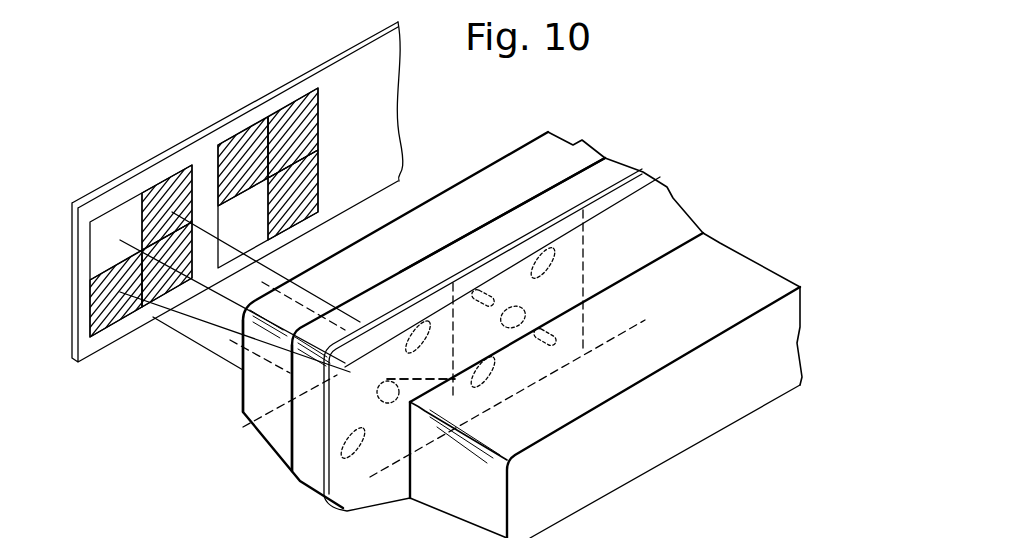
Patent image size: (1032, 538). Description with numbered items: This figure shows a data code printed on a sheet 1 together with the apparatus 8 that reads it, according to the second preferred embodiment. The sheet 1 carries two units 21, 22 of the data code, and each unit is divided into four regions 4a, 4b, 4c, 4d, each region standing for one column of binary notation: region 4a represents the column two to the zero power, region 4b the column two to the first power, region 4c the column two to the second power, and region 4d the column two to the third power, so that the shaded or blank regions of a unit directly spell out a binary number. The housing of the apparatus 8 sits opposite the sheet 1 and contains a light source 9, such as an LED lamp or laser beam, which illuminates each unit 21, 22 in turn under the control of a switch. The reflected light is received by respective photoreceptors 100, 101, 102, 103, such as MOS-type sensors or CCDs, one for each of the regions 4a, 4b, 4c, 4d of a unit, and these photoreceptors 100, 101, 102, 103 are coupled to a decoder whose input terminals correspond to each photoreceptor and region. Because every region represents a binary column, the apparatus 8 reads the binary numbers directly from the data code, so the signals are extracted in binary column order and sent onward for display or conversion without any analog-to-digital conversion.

The sheet 1 is at (212, 122).
The unit 21 is at (107, 253).
The unit 22 is at (283, 108).
The region 4a is at (100, 238).
The region 4b is at (104, 320).
The region 4c is at (165, 178).
The region 4d is at (185, 281).
The apparatus 8 is at (577, 160).
The light source 9 is at (497, 404).
The photoreceptor 100 is at (262, 438).
The photoreceptor 101 is at (310, 480).
The photoreceptor 102 is at (386, 282).
The photoreceptor 103 is at (421, 410).